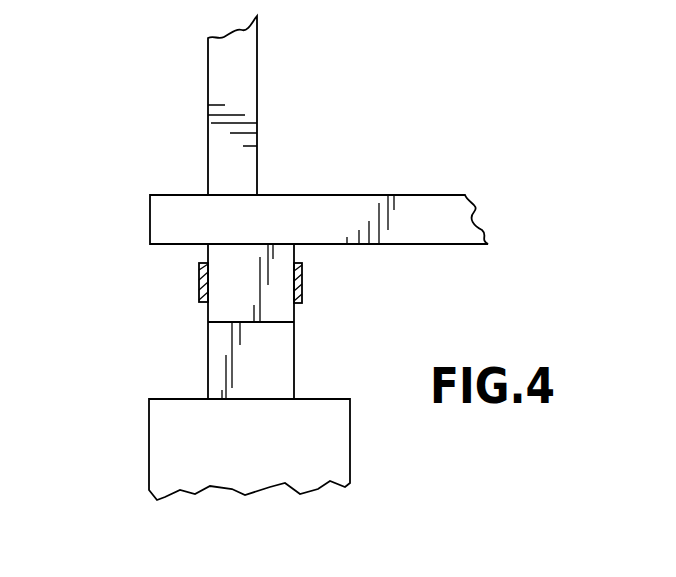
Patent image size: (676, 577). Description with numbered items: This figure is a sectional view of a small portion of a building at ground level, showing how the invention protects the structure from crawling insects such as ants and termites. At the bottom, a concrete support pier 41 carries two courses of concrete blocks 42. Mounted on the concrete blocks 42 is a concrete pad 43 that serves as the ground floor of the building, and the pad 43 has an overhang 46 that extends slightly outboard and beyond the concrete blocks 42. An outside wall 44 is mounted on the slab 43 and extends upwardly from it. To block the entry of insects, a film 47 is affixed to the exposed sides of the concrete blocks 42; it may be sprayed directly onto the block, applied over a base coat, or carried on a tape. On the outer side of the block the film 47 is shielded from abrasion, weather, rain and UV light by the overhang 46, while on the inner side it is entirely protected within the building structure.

The concrete support pier 41 is at (350, 448).
The concrete blocks 42 is at (208, 313).
The concrete pad 43 is at (413, 208).
The outside wall 44 is at (243, 97).
The overhang 46 is at (172, 245).
The film 47 is at (199, 290).